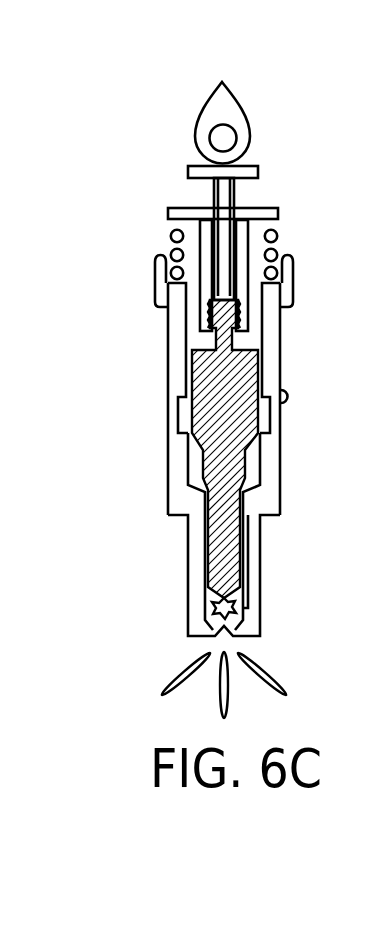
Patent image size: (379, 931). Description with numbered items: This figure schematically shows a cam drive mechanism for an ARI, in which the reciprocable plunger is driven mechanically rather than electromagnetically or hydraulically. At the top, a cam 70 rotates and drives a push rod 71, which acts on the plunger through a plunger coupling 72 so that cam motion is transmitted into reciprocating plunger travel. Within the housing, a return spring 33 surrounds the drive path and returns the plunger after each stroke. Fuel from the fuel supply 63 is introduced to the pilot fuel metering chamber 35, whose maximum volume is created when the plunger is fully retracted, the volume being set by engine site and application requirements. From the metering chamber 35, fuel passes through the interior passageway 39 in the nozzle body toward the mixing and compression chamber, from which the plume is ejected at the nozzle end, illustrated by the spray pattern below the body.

The cam 70 is at (240, 110).
The push rod 71 is at (258, 170).
The plunger coupling 72 is at (280, 208).
The return spring 33 is at (277, 277).
The fuel supply 63 is at (288, 397).
The pilot fuel metering chamber 35 is at (253, 465).
The interior passageway 39 is at (253, 548).